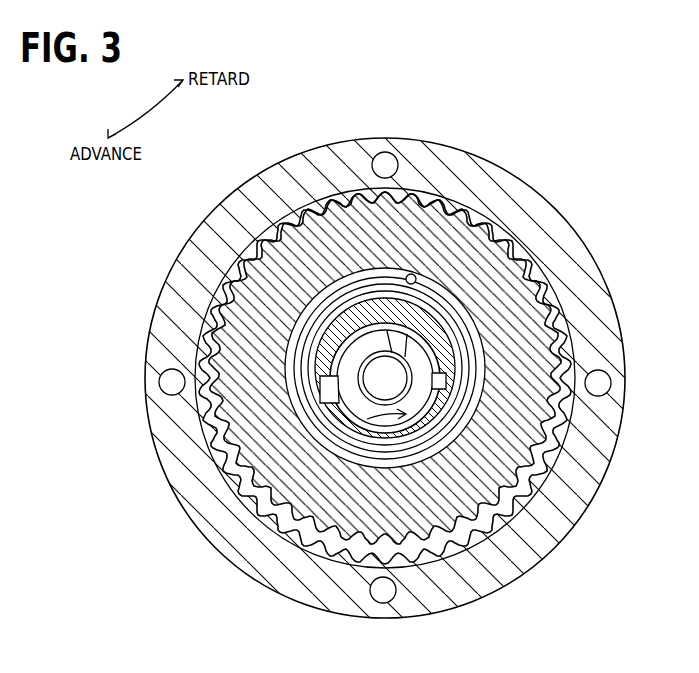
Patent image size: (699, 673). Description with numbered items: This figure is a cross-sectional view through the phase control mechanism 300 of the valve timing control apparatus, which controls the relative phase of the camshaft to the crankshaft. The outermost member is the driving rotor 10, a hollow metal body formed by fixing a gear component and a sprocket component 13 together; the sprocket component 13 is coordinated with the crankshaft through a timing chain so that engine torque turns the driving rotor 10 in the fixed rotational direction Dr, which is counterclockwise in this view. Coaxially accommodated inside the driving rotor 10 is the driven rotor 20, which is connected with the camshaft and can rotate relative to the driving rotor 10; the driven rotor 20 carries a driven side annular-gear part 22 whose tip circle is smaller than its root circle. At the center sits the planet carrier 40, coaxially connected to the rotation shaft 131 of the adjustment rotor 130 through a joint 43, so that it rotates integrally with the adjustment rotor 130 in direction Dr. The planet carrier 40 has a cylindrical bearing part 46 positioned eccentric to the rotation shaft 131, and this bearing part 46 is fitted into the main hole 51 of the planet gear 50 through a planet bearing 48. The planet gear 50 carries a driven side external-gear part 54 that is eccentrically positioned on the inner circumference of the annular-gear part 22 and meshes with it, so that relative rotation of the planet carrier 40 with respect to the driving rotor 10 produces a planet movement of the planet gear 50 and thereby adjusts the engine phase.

The phase control mechanism 300 is at (374, 378).
The driving rotor 10 is at (357, 378).
The sprocket component 13 is at (197, 247).
The driven side annular-gear part 22 is at (247, 222).
The driven rotor 20 is at (333, 350).
The planet gear 50 is at (385, 350).
The driven side external-gear part 54 is at (287, 233).
The bearing part 46 is at (315, 322).
The main hole 51 is at (412, 281).
The planet bearing 48 is at (450, 432).
The planet carrier 40 is at (338, 443).
The joint 43 is at (343, 388).
The adjustment rotor 130 is at (338, 253).
The rotation shaft 131 is at (367, 350).
The rotational direction Dr is at (386, 421).